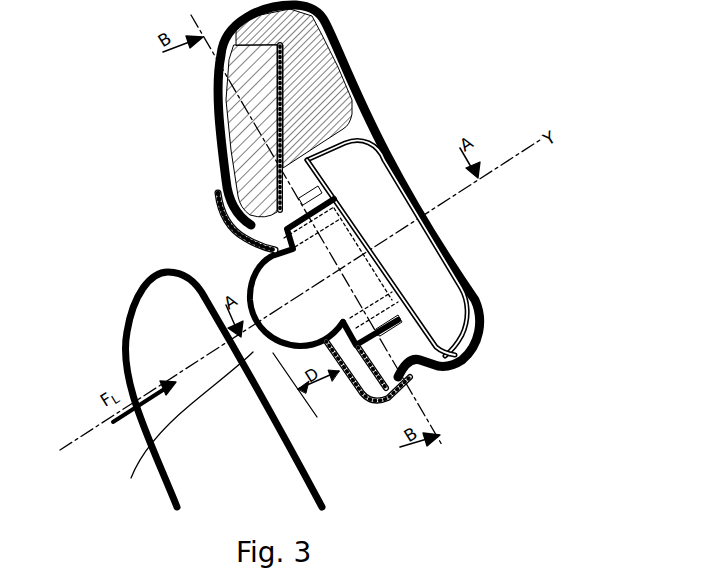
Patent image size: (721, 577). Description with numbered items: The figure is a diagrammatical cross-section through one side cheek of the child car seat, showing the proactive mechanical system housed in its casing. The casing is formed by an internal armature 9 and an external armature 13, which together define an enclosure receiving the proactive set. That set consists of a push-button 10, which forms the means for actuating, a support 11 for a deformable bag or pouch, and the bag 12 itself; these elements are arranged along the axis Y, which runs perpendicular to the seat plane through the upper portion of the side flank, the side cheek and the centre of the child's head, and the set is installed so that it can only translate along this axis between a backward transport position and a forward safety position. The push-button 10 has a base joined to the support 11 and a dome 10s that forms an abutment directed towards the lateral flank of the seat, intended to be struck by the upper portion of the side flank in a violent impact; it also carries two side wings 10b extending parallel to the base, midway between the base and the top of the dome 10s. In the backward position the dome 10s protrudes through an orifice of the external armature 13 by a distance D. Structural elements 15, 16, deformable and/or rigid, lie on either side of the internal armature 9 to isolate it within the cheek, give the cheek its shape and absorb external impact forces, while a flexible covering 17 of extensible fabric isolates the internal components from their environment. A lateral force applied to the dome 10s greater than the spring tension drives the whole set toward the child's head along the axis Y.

The internal armature 9 is at (349, 191).
The push-button 10 is at (224, 346).
The side wings 10b is at (262, 250).
The dome 10s is at (178, 427).
The support 11 is at (420, 313).
The bag 12 is at (438, 283).
The external armature 13 is at (378, 403).
The structural element 15 is at (322, 77).
The structural element 16 is at (258, 122).
The flexible covering 17 is at (385, 107).